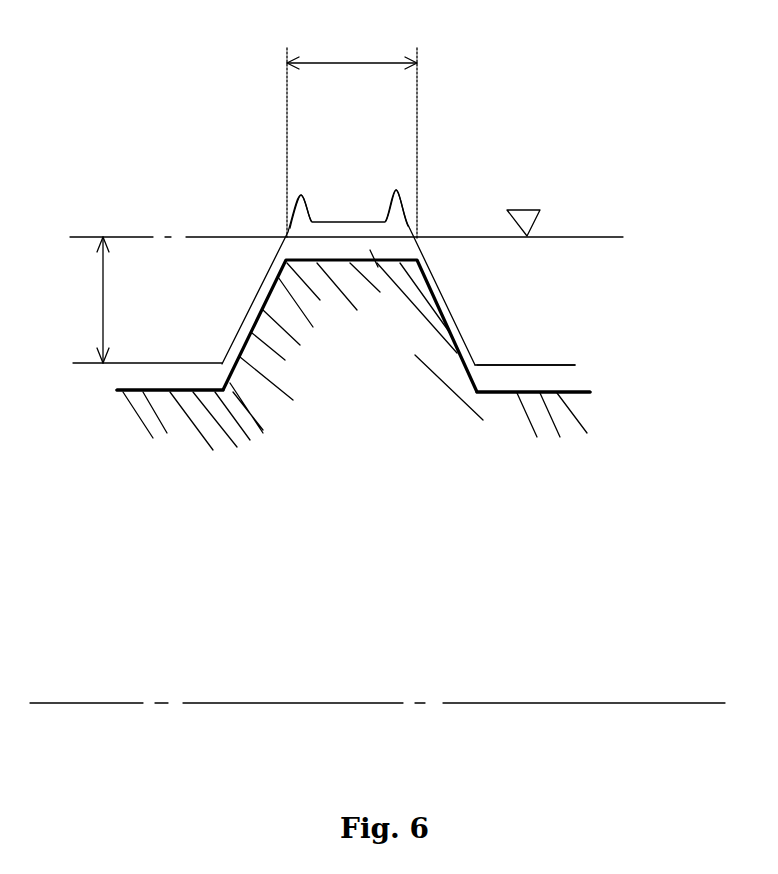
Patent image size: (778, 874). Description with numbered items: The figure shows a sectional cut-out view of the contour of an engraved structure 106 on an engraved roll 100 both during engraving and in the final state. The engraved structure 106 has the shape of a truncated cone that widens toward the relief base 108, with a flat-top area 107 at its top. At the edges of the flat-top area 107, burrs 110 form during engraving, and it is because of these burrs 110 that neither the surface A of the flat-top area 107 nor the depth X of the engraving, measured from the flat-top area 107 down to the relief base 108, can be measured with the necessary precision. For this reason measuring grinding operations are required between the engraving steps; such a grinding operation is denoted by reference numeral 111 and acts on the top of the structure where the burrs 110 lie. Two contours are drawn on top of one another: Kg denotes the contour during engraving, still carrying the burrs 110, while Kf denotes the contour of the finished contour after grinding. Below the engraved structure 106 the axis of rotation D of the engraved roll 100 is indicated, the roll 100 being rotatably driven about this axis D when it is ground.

The engraved roll 100 is at (410, 500).
The engraved structures 106 is at (207, 243).
The flat-top areas 107 is at (372, 251).
The relief base 108 is at (555, 398).
The burrs 110 is at (293, 193).
The grinding operation 111 is at (540, 210).
The surfaces of the flat-top areas A is at (352, 135).
The depths of the engraving X is at (130, 312).
The contour of the finished contour Kf is at (167, 392).
The contour during engraving Kg is at (498, 367).
The axis of rotation D is at (80, 703).